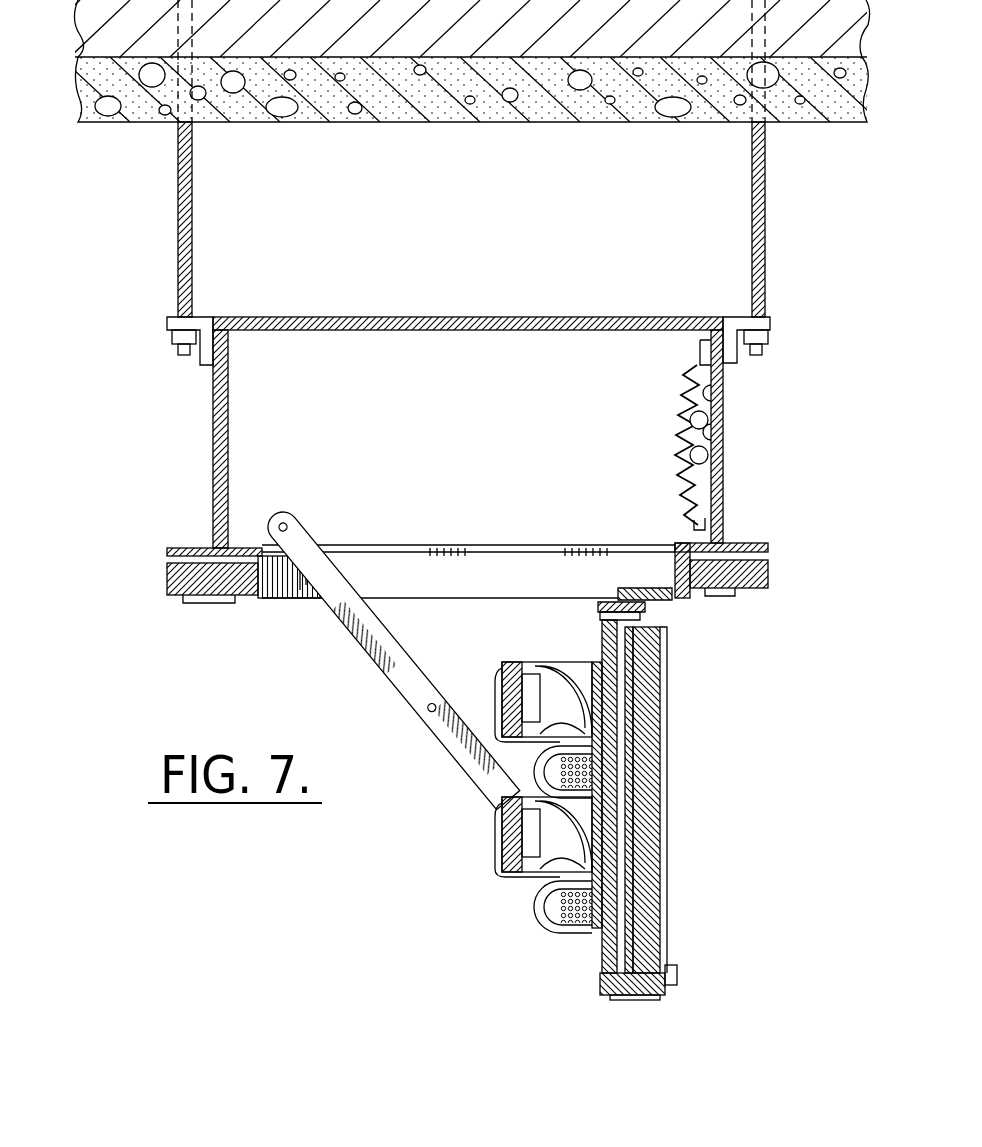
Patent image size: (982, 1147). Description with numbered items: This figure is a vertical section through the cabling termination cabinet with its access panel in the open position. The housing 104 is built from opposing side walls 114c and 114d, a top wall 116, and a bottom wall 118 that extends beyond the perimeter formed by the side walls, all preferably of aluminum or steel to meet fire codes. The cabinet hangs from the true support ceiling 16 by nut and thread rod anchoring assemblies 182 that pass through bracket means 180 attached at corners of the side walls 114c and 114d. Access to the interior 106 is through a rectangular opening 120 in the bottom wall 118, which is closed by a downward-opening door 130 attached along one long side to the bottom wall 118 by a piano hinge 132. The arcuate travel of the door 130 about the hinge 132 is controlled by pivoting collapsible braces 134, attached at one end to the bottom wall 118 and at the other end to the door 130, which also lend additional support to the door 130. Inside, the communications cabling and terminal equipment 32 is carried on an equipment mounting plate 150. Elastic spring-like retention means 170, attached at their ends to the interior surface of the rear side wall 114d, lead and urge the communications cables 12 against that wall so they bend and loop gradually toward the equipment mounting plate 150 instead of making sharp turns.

The support ceiling 16 is at (142, 95).
The nut and thread rod anchoring assemblies 182 is at (766, 236).
The top wall 116 is at (318, 317).
The housing 104 is at (486, 402).
The bracket means 180 is at (770, 320).
The side wall 114c is at (218, 418).
The rear side wall 114d is at (722, 412).
The interior 106 is at (415, 404).
The elastic spring-like retention means 170 is at (684, 385).
The communications cables 12 is at (712, 444).
The opening 120 is at (277, 590).
The bottom wall 118 is at (703, 597).
The piano hinge 132 is at (602, 585).
The pivoting collapsible braces 134 is at (378, 663).
The communications cabling and terminal equipment 32 is at (490, 852).
The door 130 is at (672, 862).
The equipment mounting plate 150 is at (607, 937).